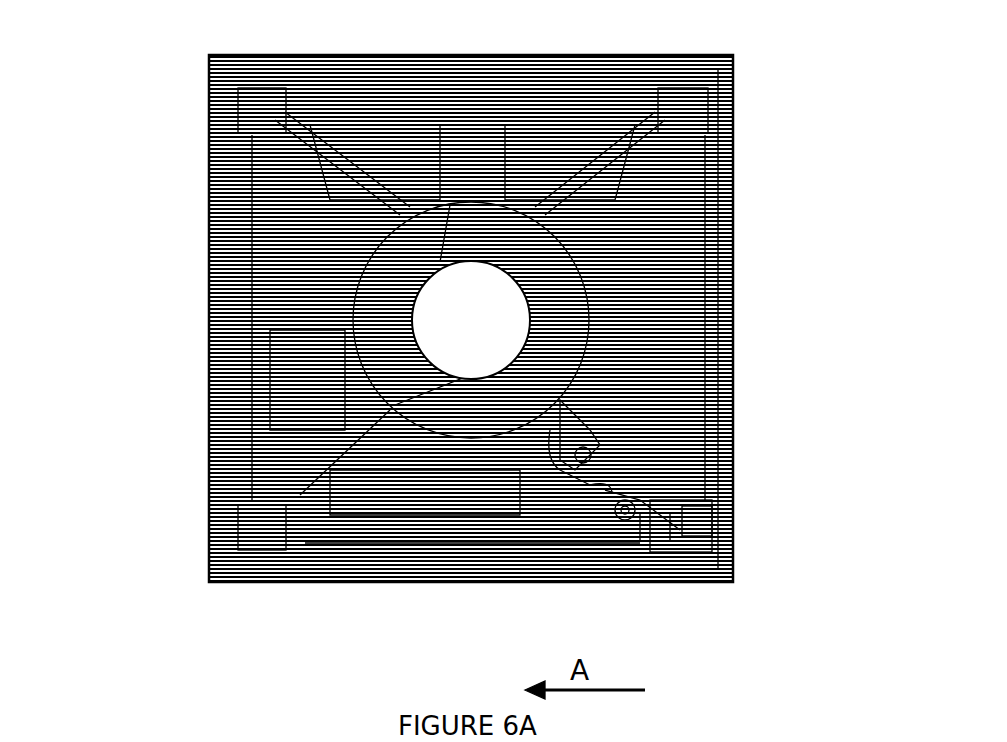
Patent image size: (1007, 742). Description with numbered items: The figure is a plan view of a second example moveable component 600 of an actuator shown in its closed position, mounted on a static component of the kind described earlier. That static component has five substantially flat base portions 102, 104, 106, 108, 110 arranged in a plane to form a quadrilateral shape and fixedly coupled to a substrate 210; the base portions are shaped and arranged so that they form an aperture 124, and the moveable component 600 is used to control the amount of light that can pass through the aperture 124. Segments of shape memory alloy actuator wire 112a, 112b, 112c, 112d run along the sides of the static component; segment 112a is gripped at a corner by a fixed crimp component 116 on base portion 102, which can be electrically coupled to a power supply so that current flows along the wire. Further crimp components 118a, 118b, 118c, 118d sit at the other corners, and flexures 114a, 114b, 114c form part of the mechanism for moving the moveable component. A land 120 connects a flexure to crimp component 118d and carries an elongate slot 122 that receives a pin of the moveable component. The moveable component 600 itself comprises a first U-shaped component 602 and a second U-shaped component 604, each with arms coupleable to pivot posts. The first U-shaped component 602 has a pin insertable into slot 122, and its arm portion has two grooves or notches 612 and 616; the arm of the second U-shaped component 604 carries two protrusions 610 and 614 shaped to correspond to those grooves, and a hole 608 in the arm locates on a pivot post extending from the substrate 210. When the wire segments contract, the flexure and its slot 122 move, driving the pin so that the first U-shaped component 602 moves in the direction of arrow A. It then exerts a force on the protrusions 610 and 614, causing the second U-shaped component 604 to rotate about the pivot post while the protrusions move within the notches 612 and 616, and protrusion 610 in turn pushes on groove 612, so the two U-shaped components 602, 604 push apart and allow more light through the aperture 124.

The moveable component 600 is at (132, 125).
The base portion 102 is at (660, 350).
The base portion 104 is at (565, 150).
The base portion 106 is at (385, 150).
The base portion 108 is at (305, 385).
The base portion 110 is at (432, 485).
The segment of SMA actuator wire 112a is at (705, 270).
The segment of SMA actuator wire 112b is at (493, 100).
The segment of SMA actuator wire 112c is at (250, 285).
The segment of SMA actuator wire 112d is at (390, 545).
The flexure 114a is at (635, 152).
The flexure 114b is at (300, 165).
The flexure 114c is at (305, 487).
The crimp component 116 is at (700, 520).
The crimp component 118a is at (690, 100).
The crimp component 118b is at (255, 102).
The crimp component 118c is at (250, 535).
The crimp component 118d is at (668, 542).
The land 120 is at (652, 525).
The slot 122 is at (625, 512).
The aperture 124 is at (496, 333).
The substrate 210 is at (728, 318).
The first U-shaped component 602 is at (462, 402).
The second U-shaped component 604 is at (580, 340).
The hole 608 is at (590, 455).
The protrusion 610 is at (613, 487).
The groove 612 is at (603, 492).
The protrusion 614 is at (565, 445).
The groove 616 is at (600, 490).